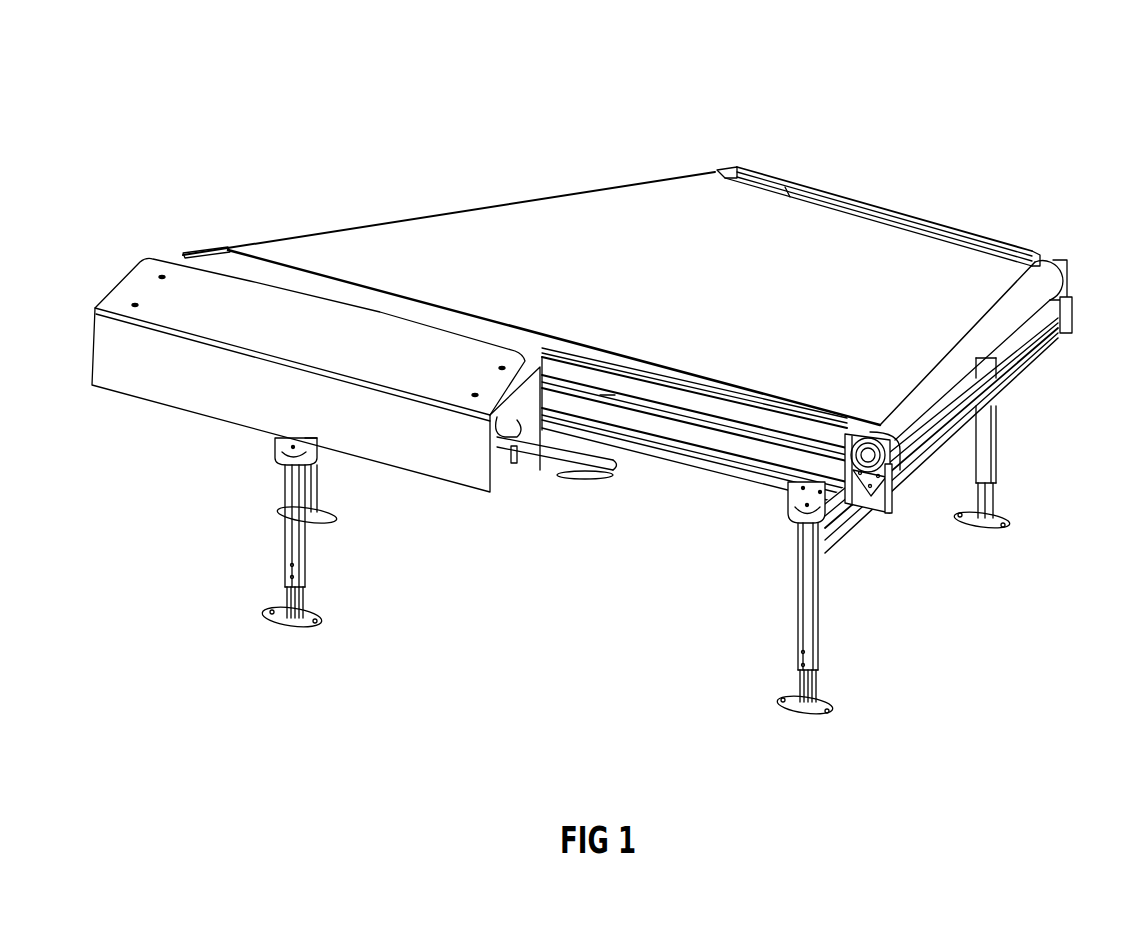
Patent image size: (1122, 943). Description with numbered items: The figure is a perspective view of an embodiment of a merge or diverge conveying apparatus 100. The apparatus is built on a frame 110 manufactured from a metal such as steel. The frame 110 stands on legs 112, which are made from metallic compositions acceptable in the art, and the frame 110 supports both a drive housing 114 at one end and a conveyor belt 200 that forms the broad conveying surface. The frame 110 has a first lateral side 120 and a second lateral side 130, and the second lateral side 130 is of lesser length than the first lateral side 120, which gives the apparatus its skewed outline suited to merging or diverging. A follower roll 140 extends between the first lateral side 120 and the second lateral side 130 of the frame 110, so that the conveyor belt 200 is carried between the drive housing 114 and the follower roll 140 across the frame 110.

The merge or diverge conveying apparatus 100 is at (848, 146).
The frame 110 is at (700, 472).
The legs 112 is at (322, 470).
The drive housing 114 is at (135, 285).
The first lateral side 120 is at (690, 408).
The second lateral side 130 is at (945, 222).
The follower roll 140 is at (905, 483).
The conveyor belt 200 is at (669, 198).